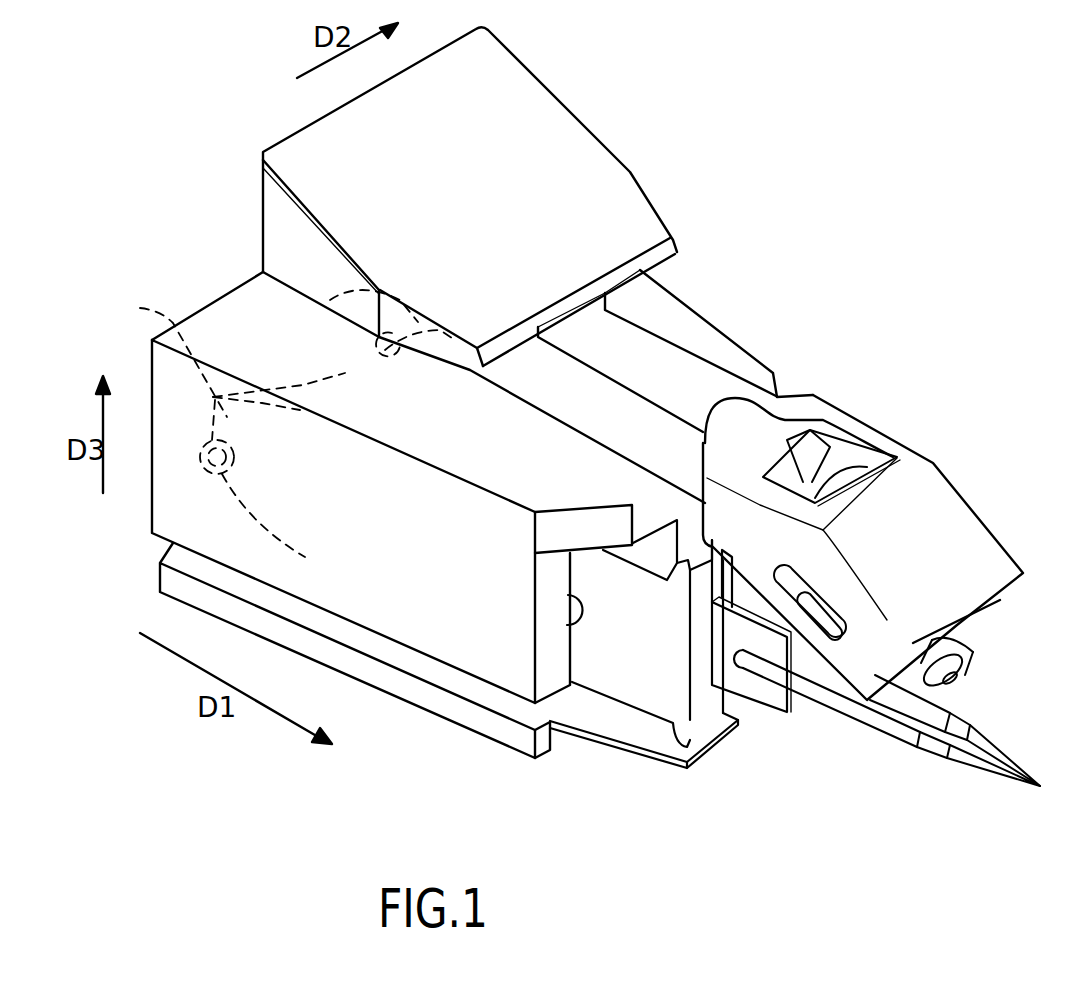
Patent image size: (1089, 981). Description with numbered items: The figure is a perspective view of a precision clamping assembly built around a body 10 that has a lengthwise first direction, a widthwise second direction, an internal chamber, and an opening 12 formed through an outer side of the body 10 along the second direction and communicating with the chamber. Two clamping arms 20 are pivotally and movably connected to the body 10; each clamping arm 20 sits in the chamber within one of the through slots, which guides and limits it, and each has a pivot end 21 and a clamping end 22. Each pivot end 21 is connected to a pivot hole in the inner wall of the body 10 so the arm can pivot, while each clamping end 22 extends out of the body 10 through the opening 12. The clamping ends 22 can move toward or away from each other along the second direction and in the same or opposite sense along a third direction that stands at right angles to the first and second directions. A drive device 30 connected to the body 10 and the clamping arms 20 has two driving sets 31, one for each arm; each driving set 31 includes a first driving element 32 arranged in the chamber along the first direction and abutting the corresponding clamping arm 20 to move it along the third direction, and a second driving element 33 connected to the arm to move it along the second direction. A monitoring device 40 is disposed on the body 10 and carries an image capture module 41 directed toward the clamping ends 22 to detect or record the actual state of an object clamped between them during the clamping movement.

The body 10 is at (236, 296).
The opening 12 is at (567, 622).
The clamping arms 20 is at (612, 687).
The pivot end 21 is at (150, 308).
The clamping end 22 is at (1000, 752).
The drive device 30 is at (735, 698).
The driving sets 31 is at (753, 729).
The first driving element 32 is at (707, 742).
The second driving element 33 is at (772, 690).
The monitoring device 40 is at (896, 547).
The image capture module 41 is at (964, 668).